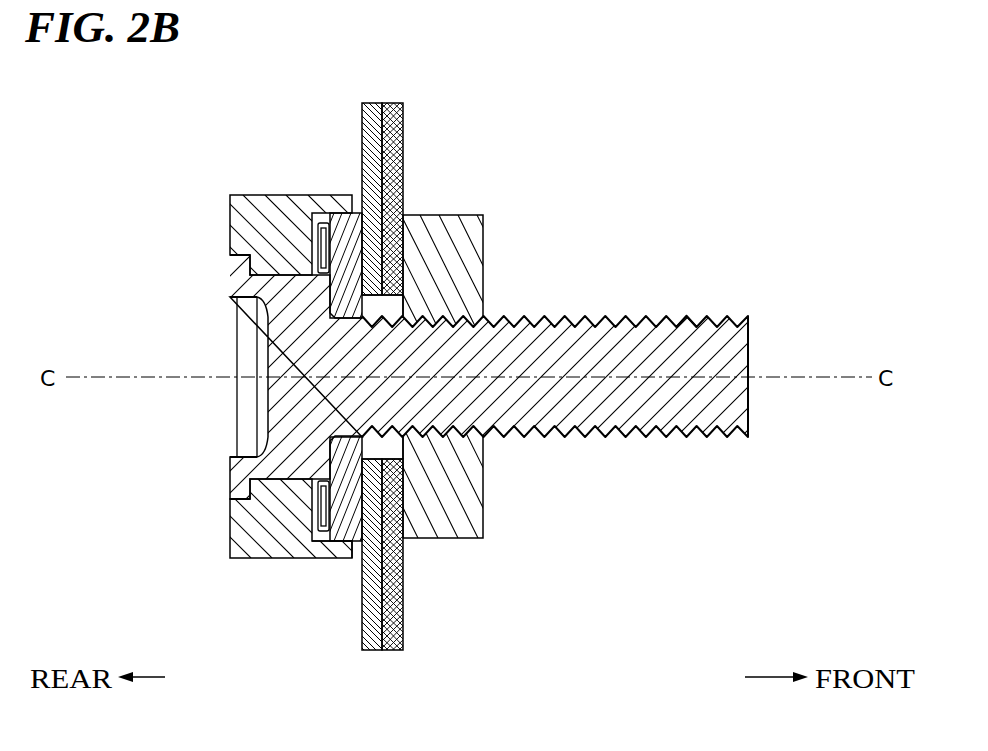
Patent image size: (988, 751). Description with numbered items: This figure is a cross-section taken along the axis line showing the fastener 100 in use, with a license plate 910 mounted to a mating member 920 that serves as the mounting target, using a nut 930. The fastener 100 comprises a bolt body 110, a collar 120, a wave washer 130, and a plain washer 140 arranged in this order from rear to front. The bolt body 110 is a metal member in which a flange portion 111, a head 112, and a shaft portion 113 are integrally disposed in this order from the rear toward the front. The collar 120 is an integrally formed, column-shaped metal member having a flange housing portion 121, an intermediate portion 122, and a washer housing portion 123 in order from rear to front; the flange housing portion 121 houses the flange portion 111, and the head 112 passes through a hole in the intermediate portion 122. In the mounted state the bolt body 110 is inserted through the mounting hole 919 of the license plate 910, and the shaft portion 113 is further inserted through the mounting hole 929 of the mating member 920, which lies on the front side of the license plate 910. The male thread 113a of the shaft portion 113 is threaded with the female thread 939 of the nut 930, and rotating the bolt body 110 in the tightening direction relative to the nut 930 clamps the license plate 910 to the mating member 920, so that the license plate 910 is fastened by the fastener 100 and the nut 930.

The fastener 100 is at (192, 112).
The bolt body 110 is at (230, 272).
The flange portion 111 is at (228, 480).
The head 112 is at (277, 425).
The shaft portion 113 is at (660, 440).
The male thread 113a is at (690, 314).
The collar 120 is at (230, 232).
The flange housing portion 121 is at (230, 530).
The intermediate portion 122 is at (278, 540).
The washer housing portion 123 is at (323, 556).
The wave washer 130 is at (321, 250).
The plain washer 140 is at (288, 194).
The license plate 910 is at (362, 138).
The mounting hole 919 is at (403, 540).
The mating member 920 is at (403, 137).
The mounting hole 929 is at (430, 510).
The nut 930 is at (483, 250).
The female thread 939 is at (478, 315).